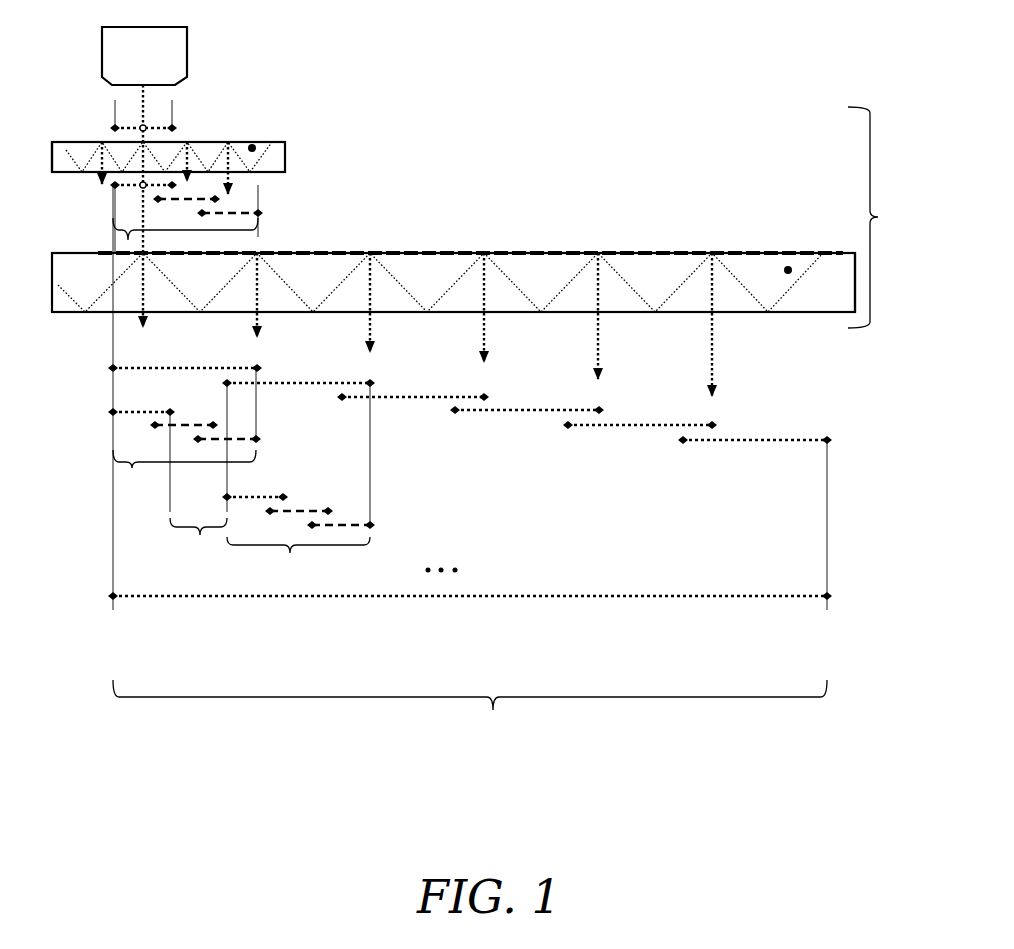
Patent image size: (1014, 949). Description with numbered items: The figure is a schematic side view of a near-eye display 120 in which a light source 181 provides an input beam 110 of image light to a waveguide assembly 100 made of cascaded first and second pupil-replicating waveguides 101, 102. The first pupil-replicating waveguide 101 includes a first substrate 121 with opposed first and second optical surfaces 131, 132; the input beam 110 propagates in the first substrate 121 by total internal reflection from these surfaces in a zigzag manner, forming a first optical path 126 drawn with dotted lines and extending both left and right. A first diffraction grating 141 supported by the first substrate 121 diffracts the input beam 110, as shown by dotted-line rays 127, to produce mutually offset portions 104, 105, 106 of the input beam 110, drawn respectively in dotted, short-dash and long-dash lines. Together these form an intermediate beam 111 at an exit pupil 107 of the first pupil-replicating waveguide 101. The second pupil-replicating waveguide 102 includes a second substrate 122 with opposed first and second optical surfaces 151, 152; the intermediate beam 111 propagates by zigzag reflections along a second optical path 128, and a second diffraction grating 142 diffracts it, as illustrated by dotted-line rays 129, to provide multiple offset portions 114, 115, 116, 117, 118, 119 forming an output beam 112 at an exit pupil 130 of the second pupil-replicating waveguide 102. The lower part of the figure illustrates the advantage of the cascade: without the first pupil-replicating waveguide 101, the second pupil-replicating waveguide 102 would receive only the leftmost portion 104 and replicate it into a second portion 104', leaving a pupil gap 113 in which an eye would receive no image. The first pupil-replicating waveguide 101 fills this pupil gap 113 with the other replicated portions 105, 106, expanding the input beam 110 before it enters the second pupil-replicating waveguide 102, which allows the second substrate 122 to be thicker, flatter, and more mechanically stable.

The waveguide assembly 100 is at (878, 217).
The first pupil-replicating waveguide 101 is at (306, 146).
The second pupil-replicating waveguide 102 is at (834, 343).
The portion of the input beam 104 is at (133, 297).
The second portion 104' is at (255, 484).
The portion of the input beam 105 is at (193, 199).
The portion of the input beam 106 is at (237, 212).
The exit pupil of the first pupil-replicating waveguide 107 is at (123, 237).
The input beam 110 is at (163, 112).
The intermediate beam 111 is at (122, 210).
The output beam 112 is at (602, 603).
The pupil gap 113 is at (198, 487).
The offset portion of the output beam 114 is at (184, 397).
The offset portion of the output beam 115 is at (298, 475).
The offset portion of the output beam 116 is at (408, 404).
The offset portion of the output beam 117 is at (508, 417).
The offset portion of the output beam 118 is at (620, 432).
The offset portion of the output beam 119 is at (736, 447).
The near-eye display 120 is at (548, 101).
The first substrate 121 is at (252, 147).
The second substrate 122 is at (788, 267).
The first optical path 126 is at (208, 160).
The dotted-line rays 127 is at (286, 172).
The second optical path 128 is at (440, 275).
The dotted-line rays 129 is at (484, 340).
The exit pupil of the second pupil-replicating waveguide 130 is at (470, 711).
The first optical surface 131 is at (85, 139).
The second optical surface 132 is at (54, 165).
The first diffraction grating 141 is at (273, 142).
The second diffraction grating 142 is at (522, 252).
The first optical surface 151 is at (666, 251).
The second optical surface 152 is at (692, 315).
The light source 181 is at (160, 67).